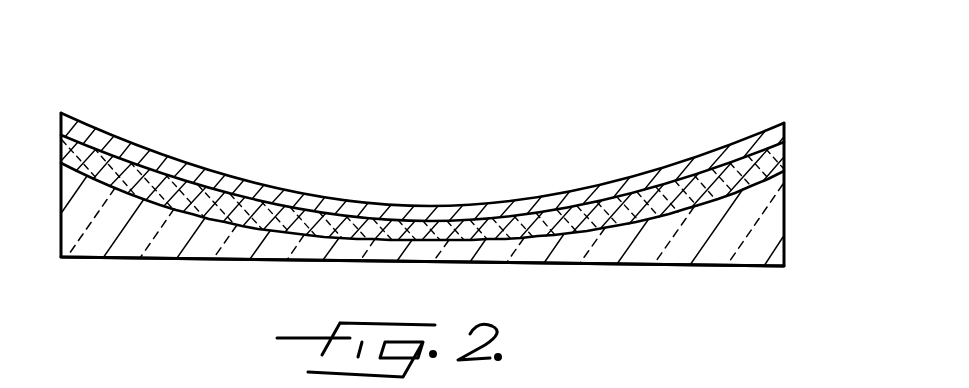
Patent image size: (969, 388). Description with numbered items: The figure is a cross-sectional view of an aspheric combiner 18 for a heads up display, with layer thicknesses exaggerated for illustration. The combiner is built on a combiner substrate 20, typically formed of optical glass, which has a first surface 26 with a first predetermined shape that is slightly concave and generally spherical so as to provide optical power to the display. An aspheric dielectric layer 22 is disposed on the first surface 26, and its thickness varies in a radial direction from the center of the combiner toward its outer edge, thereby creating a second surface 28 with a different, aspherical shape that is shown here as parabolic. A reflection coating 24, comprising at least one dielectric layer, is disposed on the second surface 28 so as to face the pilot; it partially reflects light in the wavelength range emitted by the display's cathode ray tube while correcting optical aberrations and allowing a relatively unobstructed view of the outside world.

The aspheric combiner 18 is at (578, 105).
The combiner substrate 20 is at (786, 238).
The aspheric dielectric layer 22 is at (788, 156).
The reflection coating 24 is at (753, 134).
The first surface 26 is at (206, 212).
The second surface 28 is at (145, 174).